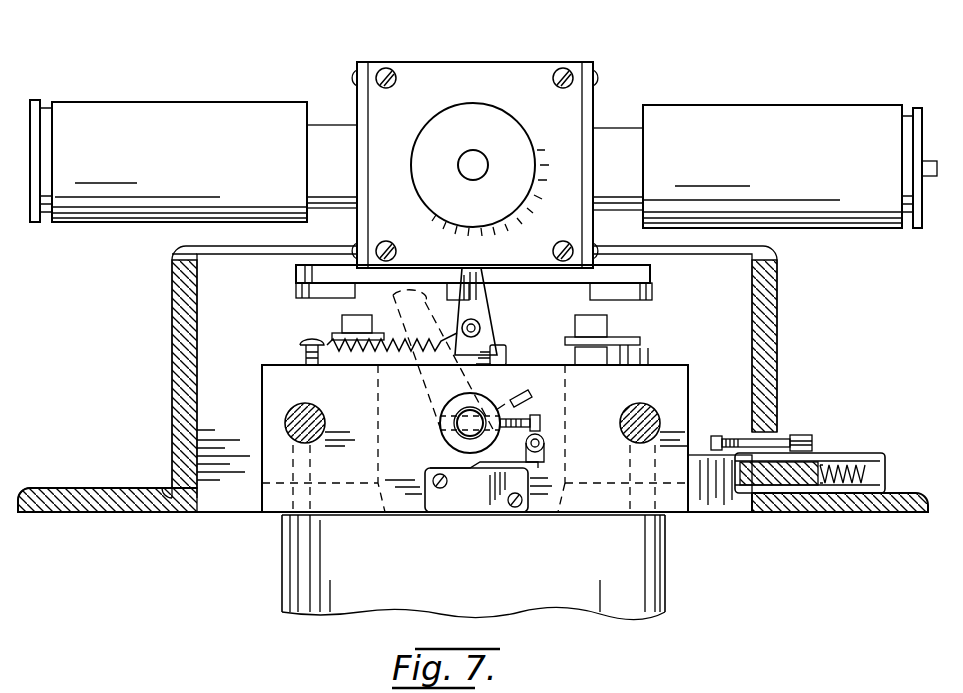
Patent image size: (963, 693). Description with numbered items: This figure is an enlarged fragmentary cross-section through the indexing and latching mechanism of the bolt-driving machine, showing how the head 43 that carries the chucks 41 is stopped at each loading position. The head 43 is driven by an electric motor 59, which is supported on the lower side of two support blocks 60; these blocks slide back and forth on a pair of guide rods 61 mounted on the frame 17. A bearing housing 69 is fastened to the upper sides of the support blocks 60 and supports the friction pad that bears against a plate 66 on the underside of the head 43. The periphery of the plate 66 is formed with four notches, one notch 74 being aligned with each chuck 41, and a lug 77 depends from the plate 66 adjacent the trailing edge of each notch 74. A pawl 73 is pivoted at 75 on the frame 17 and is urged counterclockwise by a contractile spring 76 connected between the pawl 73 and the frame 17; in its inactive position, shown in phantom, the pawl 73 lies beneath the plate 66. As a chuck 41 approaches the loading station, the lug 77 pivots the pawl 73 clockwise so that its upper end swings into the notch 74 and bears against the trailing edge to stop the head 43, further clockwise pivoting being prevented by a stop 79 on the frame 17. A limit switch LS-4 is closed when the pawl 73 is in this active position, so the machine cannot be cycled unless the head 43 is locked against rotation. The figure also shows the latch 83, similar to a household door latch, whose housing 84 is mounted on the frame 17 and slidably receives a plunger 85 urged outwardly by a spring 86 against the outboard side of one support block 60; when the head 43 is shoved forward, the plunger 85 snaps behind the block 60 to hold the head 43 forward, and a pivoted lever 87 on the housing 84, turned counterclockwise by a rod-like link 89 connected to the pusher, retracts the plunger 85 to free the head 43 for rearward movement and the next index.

The chuck 41 is at (172, 96).
The head 43 is at (428, 70).
The frame 17 is at (760, 300).
The plate 66 is at (343, 268).
The lug 77 is at (452, 283).
The notch 74 is at (478, 270).
The pawl 73 is at (482, 324).
The stop 79 is at (508, 352).
The contractile spring 76 is at (405, 360).
The bearing housing 69 is at (625, 352).
The guide rod 61 is at (285, 425).
The support block 60 is at (375, 512).
The pivot 75 is at (462, 430).
The limit switch LS-4 is at (450, 512).
The electric motor 59 is at (282, 590).
The plunger 85 is at (708, 505).
The spring 86 is at (885, 468).
The latch 83 is at (745, 500).
The housing 84 is at (850, 455).
The lever 87 is at (782, 440).
The link 89 is at (716, 436).